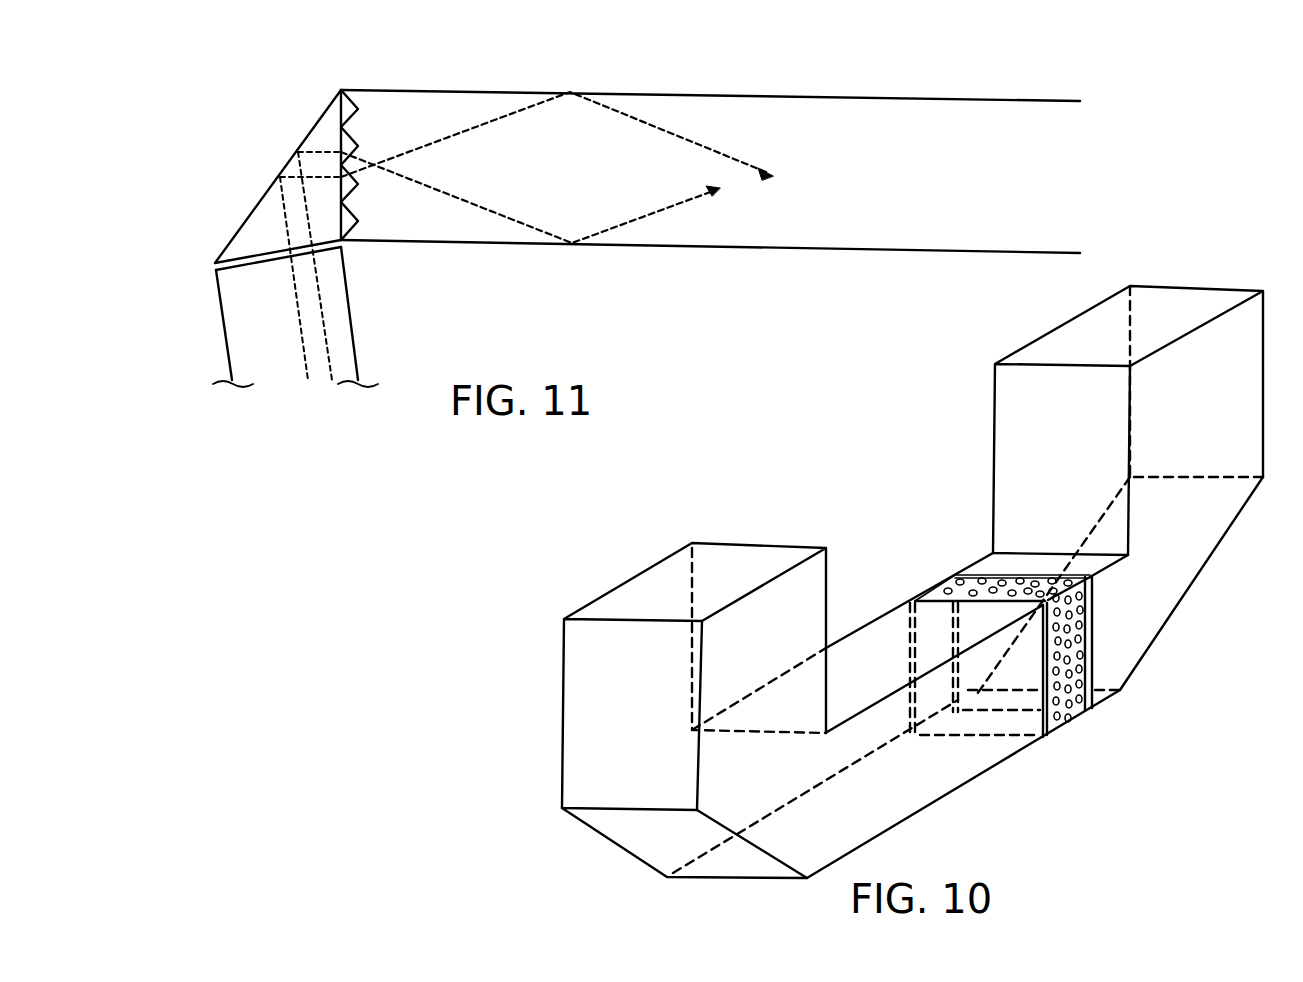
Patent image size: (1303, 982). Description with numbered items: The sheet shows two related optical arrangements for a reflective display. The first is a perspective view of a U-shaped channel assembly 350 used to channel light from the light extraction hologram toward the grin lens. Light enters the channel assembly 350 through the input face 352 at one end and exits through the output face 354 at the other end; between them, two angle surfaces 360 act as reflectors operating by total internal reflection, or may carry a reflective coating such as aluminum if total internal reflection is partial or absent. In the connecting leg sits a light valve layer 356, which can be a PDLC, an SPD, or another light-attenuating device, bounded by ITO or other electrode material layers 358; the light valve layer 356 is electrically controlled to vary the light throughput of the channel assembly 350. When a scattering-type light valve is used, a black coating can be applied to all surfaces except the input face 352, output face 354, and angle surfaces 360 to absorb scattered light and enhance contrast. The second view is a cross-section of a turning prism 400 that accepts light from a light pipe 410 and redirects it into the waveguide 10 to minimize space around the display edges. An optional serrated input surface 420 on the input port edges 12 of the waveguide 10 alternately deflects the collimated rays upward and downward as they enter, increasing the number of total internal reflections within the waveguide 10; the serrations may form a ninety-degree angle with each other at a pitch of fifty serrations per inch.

In FIG. 11, the waveguide 10 is at (923, 243).
In FIG. 11, the input port edges 12 is at (350, 207).
In FIG. 11, the turning prism 400 is at (311, 129).
In FIG. 11, the light pipe 410 is at (255, 315).
In FIG. 11, the serrated input surface 420 is at (352, 90).
In FIG. 10, the channel assembly 350 is at (990, 820).
In FIG. 10, the input face 352 is at (1172, 302).
In FIG. 10, the output face 354 is at (635, 600).
In FIG. 10, the light valve layer 356 is at (1080, 715).
In FIG. 10, the electrode material layers 358 is at (1090, 640).
In FIG. 10, the angle surfaces 360 is at (662, 840).